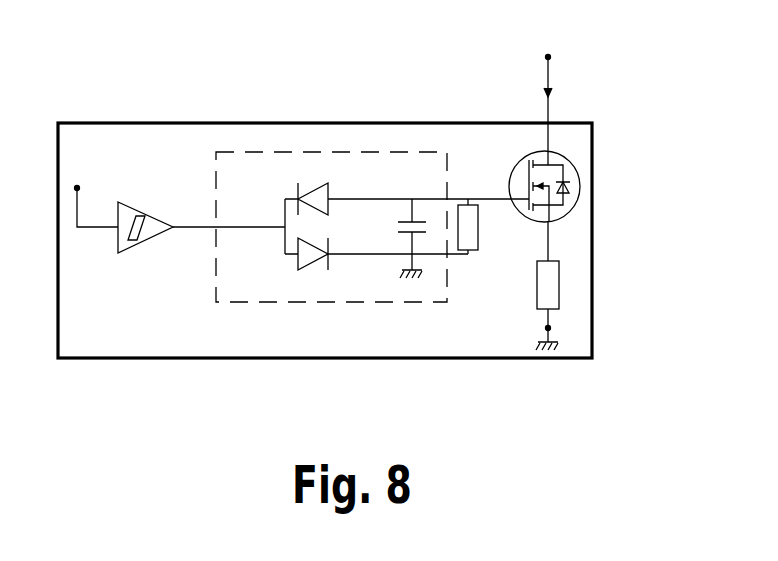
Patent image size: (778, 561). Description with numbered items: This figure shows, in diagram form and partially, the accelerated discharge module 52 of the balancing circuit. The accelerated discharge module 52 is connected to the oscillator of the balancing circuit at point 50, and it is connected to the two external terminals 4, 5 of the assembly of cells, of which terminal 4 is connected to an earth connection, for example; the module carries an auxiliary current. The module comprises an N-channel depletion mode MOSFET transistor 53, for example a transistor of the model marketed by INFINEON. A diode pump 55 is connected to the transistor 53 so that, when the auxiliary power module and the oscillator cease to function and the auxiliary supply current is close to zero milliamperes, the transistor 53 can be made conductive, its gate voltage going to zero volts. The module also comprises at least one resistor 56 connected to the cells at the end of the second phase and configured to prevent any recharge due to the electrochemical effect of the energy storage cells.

The external terminal 4 is at (548, 328).
The external terminal 5 is at (548, 57).
The point 50 is at (78, 188).
The accelerated discharge module 52 is at (100, 358).
The MOSFET transistor 53 is at (560, 221).
The diode pump 55 is at (297, 151).
The resistor 56 is at (548, 288).